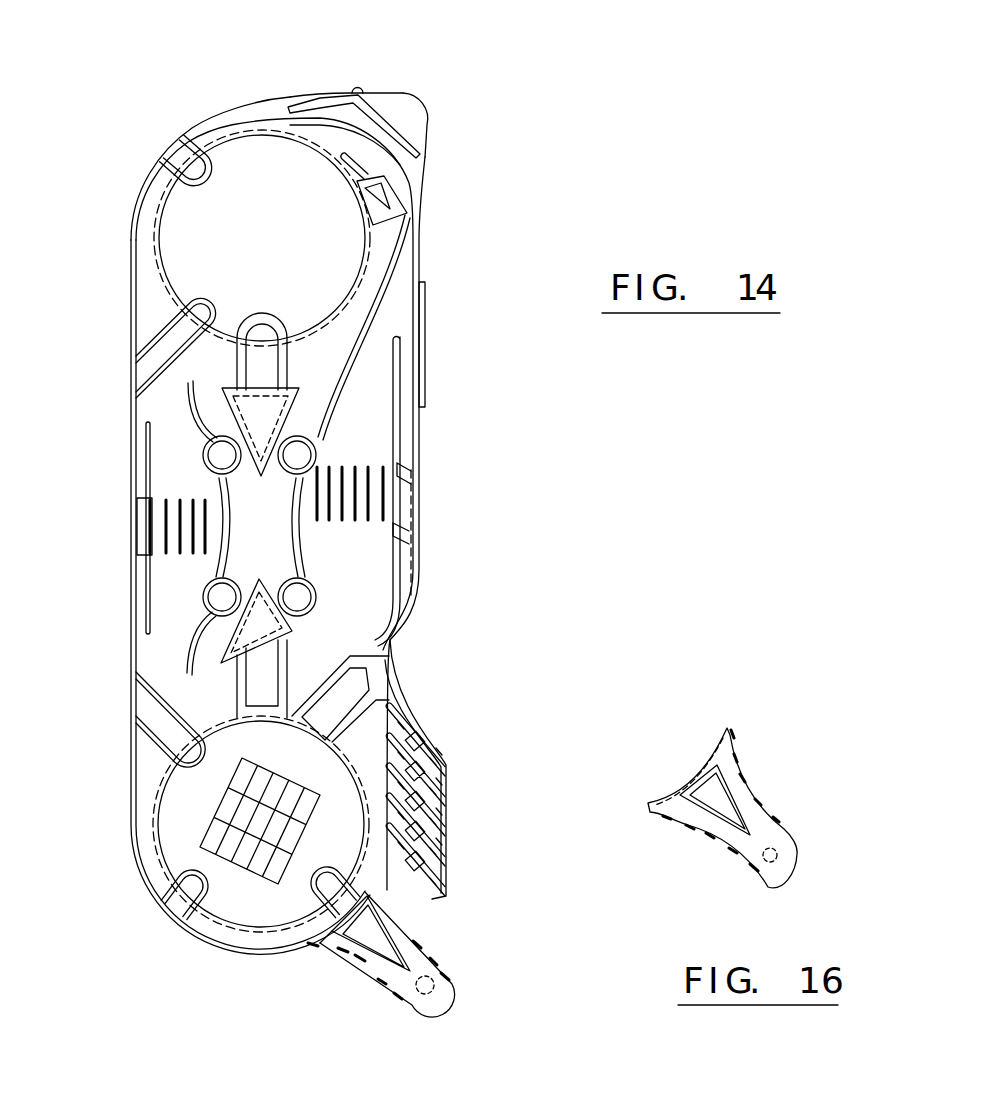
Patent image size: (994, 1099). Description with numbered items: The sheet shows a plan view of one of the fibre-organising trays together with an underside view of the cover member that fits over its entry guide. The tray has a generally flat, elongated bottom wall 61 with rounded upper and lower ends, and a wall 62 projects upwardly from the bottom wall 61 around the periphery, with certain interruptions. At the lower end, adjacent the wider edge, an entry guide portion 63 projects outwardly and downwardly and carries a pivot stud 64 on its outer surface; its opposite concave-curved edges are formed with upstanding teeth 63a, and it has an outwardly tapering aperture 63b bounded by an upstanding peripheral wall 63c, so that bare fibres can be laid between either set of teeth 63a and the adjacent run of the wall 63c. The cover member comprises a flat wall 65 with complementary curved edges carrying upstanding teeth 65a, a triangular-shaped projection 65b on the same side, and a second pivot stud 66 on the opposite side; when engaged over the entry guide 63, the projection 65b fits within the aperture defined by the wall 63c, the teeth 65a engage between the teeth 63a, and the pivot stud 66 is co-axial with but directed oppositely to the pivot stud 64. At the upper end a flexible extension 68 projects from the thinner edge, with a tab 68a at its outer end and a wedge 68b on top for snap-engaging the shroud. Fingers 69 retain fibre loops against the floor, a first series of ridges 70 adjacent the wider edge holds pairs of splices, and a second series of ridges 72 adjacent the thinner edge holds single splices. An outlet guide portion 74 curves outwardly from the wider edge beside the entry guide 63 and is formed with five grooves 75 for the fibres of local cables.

In FIG. 14, the bottom wall 61 is at (357, 417).
In FIG. 14, the wall 62 is at (418, 243).
In FIG. 14, the entry guide portion 63 is at (355, 975).
In FIG. 14, the teeth 63a is at (432, 960).
In FIG. 14, the aperture 63b is at (372, 930).
In FIG. 14, the upstanding peripheral wall 63c is at (337, 937).
In FIG. 14, the pivot stud 64 is at (430, 990).
In FIG. 16, the flat wall 65 is at (690, 807).
In FIG. 16, the teeth 65a is at (757, 803).
In FIG. 16, the triangular-shaped projection 65b is at (707, 793).
In FIG. 16, the second pivot stud 66 is at (777, 855).
In FIG. 14, the flexible extension 68 is at (315, 97).
In FIG. 14, the tab 68a is at (413, 115).
In FIG. 14, the wedge 68b is at (357, 88).
In FIG. 14, the fingers 69 is at (147, 712).
In FIG. 14, the first series of ridges 70 is at (370, 503).
In FIG. 14, the second series of ridges 72 is at (187, 525).
In FIG. 14, the outlet guide portion 74 is at (405, 713).
In FIG. 14, the grooves 75 is at (433, 747).